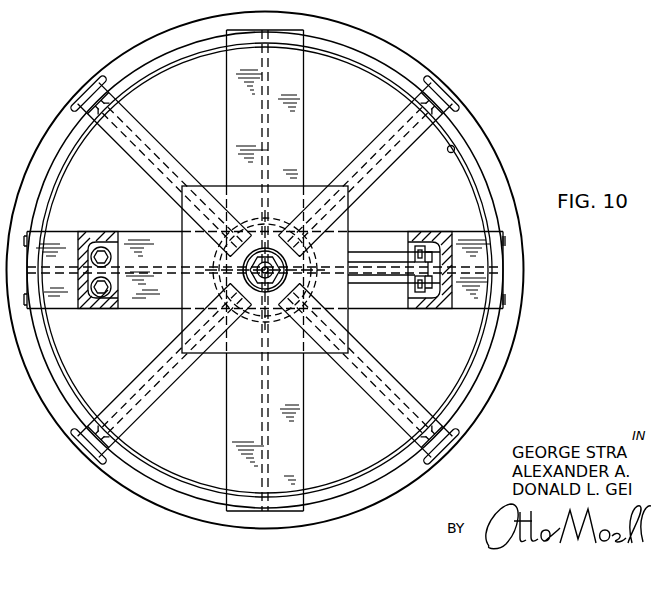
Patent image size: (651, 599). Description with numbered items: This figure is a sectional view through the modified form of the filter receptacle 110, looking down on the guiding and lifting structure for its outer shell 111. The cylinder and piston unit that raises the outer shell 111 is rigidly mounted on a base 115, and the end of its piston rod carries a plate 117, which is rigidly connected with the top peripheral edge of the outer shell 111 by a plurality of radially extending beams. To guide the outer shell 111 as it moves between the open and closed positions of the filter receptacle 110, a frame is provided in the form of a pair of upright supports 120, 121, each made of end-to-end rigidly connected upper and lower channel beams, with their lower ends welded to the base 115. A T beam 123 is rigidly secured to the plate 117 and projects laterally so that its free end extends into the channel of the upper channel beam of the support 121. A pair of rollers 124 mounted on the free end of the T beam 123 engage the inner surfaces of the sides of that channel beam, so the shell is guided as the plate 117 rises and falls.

The filter receptacle 110 is at (455, 148).
The outer shell 111 is at (497, 173).
The base 115 is at (303, 121).
The plate 117 is at (350, 223).
The upright support 120 is at (430, 231).
The upright support 121 is at (99, 232).
The T beam 123 is at (382, 286).
The rollers 124 is at (426, 298).